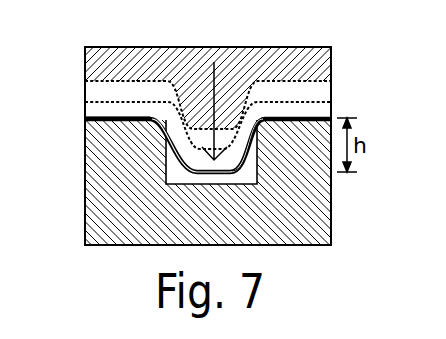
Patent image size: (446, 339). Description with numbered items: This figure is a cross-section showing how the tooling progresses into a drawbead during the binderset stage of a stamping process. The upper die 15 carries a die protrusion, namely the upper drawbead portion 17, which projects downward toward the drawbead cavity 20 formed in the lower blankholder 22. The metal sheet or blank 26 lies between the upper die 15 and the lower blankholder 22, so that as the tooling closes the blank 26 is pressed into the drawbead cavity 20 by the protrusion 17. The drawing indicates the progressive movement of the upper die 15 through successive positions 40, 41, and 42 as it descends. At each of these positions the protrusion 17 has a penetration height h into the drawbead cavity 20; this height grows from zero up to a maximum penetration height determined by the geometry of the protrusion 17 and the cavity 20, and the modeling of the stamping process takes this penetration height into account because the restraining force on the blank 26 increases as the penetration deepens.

The upper die 15 is at (304, 62).
The upper drawbead portion 17 is at (222, 113).
The drawbead cavity 20 is at (171, 169).
The lower blankholder 22 is at (102, 201).
The metal sheet or blank 26 is at (245, 157).
The position of upper die 40 is at (326, 80).
The position of upper die 41 is at (326, 101).
The position of upper die 42 is at (112, 117).